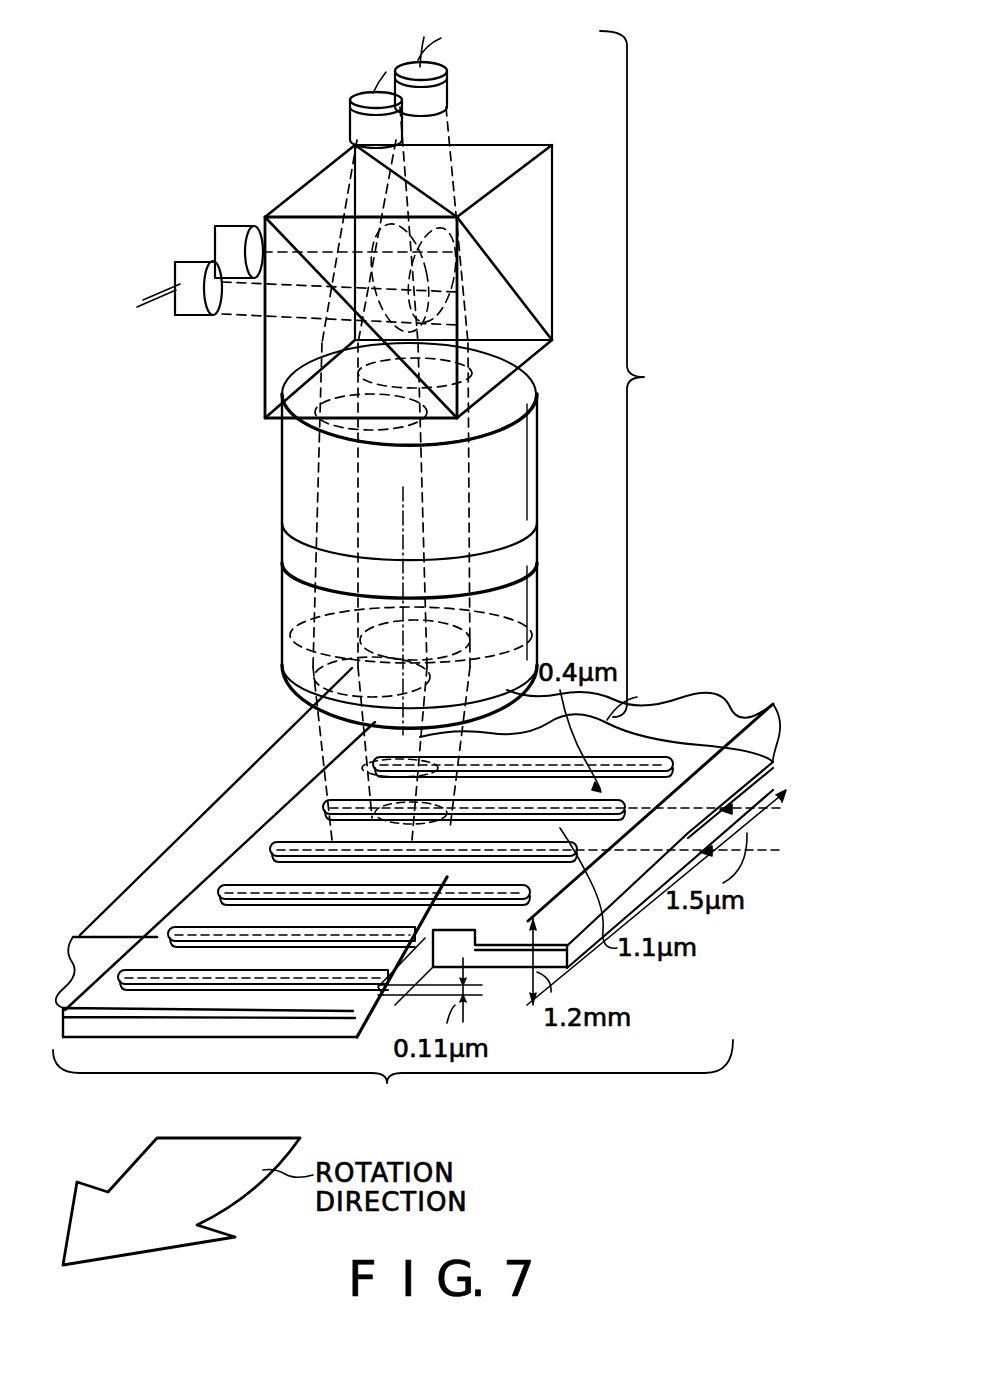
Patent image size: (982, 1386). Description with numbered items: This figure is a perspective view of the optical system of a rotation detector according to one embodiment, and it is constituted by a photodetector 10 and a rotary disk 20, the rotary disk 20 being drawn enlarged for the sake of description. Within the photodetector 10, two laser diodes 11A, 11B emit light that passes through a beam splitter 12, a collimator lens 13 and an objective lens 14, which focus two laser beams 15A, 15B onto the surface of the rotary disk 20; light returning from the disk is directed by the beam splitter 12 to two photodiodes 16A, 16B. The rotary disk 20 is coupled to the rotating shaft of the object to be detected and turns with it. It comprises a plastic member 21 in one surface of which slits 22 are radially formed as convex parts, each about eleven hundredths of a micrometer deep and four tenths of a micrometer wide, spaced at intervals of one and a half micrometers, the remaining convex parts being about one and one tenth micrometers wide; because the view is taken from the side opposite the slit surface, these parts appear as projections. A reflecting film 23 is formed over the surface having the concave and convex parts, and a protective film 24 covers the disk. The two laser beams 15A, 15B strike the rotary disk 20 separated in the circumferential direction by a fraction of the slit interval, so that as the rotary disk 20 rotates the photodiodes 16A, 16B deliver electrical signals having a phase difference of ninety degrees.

The photodetector 10 is at (645, 374).
The laser diode 11A is at (398, 66).
The laser diode 11B is at (350, 108).
The beam splitter 12 is at (305, 188).
The collimator lens 13 is at (282, 487).
The objective lens 14 is at (282, 613).
The laser beam 15A is at (373, 776).
The laser beam 15B is at (328, 822).
The photodiode 16A is at (231, 226).
The photodiode 16B is at (178, 273).
The rotary disk 20 is at (393, 1081).
The plastic member 21 is at (102, 920).
The slits 22 is at (215, 888).
The reflecting film 23 is at (357, 1038).
The protective film 24 is at (57, 1028).